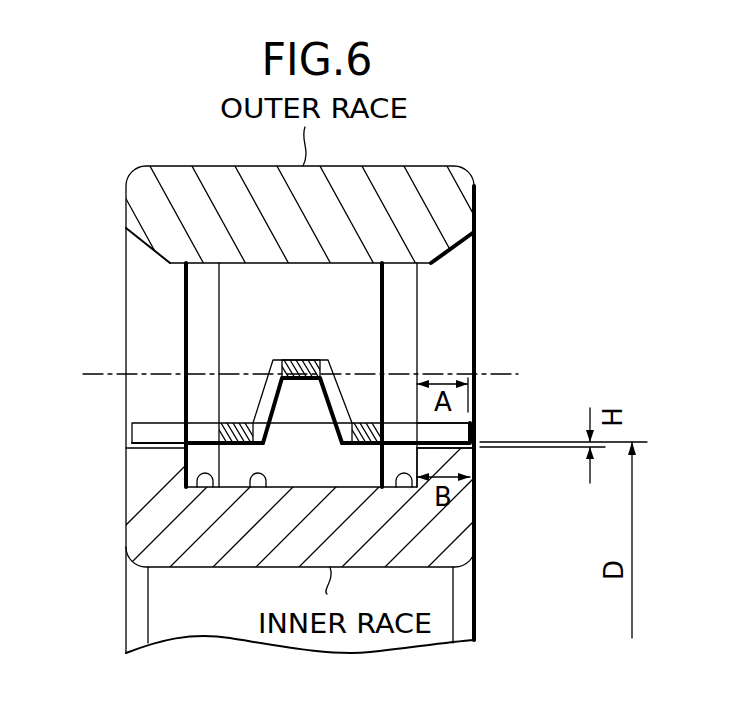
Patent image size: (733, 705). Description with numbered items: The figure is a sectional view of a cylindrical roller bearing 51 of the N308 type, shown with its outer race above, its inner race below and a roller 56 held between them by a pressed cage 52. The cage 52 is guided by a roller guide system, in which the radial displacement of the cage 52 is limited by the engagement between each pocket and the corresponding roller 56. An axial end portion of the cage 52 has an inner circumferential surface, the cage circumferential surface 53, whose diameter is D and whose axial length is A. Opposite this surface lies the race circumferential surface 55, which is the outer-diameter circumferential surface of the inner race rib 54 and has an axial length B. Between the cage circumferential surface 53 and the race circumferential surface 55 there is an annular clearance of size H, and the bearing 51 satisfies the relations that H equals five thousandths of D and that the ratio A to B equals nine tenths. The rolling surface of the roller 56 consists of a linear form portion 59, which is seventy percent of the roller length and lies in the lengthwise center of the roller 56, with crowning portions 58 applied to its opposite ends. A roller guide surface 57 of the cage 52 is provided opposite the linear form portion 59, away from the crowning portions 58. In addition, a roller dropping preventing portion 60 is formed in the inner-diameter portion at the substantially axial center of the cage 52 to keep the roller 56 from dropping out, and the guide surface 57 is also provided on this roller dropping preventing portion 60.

The cylindrical roller bearing 51 is at (514, 183).
The pressed cage 52 is at (143, 433).
The cage circumferential surface 53 is at (452, 449).
The inner race rib 54 is at (432, 530).
The race circumferential surface 55 is at (440, 440).
The roller 56 is at (363, 295).
The roller guide surface 57 is at (232, 450).
The crowning portions 58 is at (205, 487).
The linear form portion 59 is at (258, 487).
The roller dropping preventing portion 60 is at (304, 360).